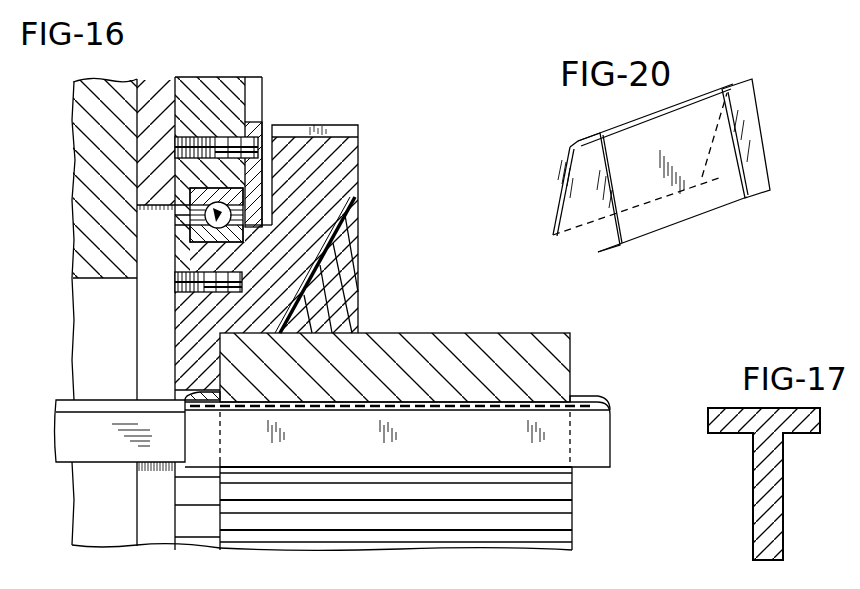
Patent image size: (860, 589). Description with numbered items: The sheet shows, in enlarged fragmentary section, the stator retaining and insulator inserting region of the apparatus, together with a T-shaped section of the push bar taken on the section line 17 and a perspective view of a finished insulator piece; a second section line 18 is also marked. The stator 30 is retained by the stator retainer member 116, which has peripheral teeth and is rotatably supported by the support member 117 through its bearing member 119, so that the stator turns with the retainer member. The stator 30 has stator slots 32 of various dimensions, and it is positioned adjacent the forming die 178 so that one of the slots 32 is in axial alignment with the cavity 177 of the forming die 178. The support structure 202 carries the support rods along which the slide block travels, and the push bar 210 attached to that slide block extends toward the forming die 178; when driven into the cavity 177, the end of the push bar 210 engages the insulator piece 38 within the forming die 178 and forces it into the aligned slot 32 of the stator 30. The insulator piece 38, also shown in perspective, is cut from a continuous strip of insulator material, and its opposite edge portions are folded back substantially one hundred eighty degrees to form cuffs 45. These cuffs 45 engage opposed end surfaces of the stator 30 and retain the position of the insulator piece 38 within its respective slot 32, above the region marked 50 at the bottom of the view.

In FIG. 16, the forming die 178 is at (86, 88).
In FIG. 16, the cavity 177 is at (88, 303).
In FIG. 16, the support structure 202 is at (152, 88).
In FIG. 16, the support member 117 is at (262, 78).
In FIG. 16, the stator retainer member 116 is at (358, 146).
In FIG. 16, the bearing member 119 is at (175, 220).
In FIG. 16, the stator 30 is at (426, 345).
In FIG. 16, the cuffs 45 is at (208, 394).
In FIG. 20, the cuffs 45 is at (603, 242).
In FIG. 16, the insulator piece 38 is at (444, 452).
In FIG. 20, the insulator piece 38 is at (688, 220).
In FIG. 16, the stator slots 32 is at (395, 482).
In FIG. 16, the push bar 210 is at (102, 453).
In FIG. 17, the push bar 210 is at (775, 493).
In FIG. 16, the base 50 is at (201, 525).
In FIG. 16, the section line 17 is at (112, 383).
In FIG. 16, the section line 18 is at (611, 372).